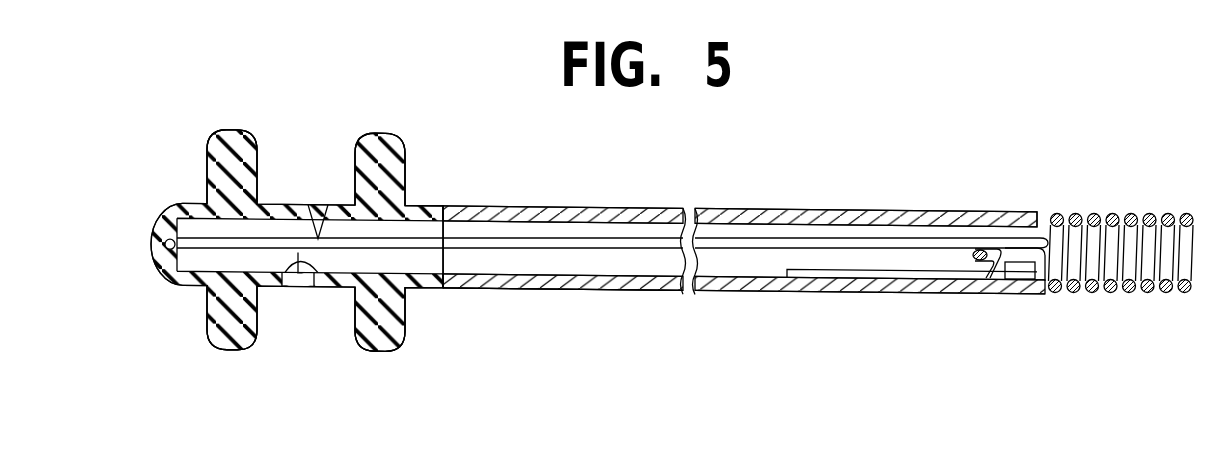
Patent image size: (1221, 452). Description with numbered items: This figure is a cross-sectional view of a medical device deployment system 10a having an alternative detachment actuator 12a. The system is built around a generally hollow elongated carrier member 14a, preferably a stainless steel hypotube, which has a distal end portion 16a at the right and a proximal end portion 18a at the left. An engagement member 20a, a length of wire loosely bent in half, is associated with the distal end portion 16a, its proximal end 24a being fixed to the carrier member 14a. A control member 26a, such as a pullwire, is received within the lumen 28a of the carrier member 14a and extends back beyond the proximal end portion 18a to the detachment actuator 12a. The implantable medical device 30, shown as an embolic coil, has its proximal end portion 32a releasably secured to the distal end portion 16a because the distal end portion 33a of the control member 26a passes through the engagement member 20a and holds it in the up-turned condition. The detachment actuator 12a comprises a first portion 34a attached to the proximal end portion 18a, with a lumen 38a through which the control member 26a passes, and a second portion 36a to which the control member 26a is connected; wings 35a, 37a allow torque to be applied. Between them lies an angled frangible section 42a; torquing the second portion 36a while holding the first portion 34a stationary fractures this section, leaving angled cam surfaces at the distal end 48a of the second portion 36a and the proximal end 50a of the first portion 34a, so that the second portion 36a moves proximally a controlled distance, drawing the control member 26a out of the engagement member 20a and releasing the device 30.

The deployment system 10a is at (773, 165).
The detachment actuator 12a is at (313, 238).
The carrier member 14a is at (597, 290).
The distal end portion 16a is at (973, 212).
The proximal end portion 18a is at (487, 206).
The engagement member 20a is at (958, 297).
The proximal end of engagement member 24a is at (790, 273).
The control member 26a is at (583, 246).
The lumen 28a is at (725, 262).
The implantable medical device 30 is at (1117, 212).
The proximal end portion of medical device 32a is at (1008, 262).
The distal end portion of control member 33a is at (1038, 225).
The first portion 34a is at (445, 206).
The wings 35a is at (377, 133).
The second portion 36a is at (187, 203).
The distal fins 37a is at (227, 130).
The lumen of first portion 38a is at (408, 204).
The angled frangible section 42a is at (287, 290).
The distal end of second portion 48a is at (310, 273).
The proximal end of first portion 50a is at (310, 204).